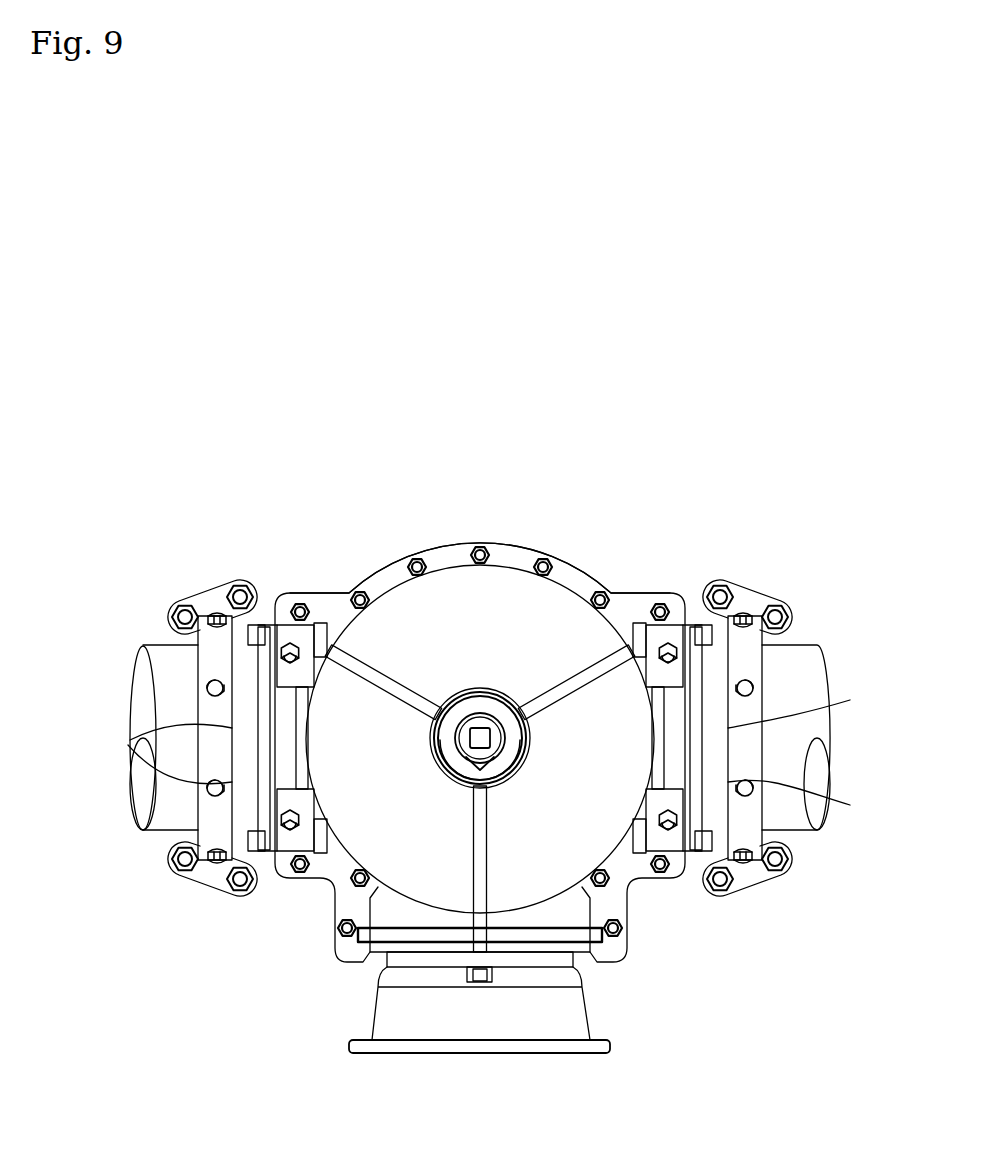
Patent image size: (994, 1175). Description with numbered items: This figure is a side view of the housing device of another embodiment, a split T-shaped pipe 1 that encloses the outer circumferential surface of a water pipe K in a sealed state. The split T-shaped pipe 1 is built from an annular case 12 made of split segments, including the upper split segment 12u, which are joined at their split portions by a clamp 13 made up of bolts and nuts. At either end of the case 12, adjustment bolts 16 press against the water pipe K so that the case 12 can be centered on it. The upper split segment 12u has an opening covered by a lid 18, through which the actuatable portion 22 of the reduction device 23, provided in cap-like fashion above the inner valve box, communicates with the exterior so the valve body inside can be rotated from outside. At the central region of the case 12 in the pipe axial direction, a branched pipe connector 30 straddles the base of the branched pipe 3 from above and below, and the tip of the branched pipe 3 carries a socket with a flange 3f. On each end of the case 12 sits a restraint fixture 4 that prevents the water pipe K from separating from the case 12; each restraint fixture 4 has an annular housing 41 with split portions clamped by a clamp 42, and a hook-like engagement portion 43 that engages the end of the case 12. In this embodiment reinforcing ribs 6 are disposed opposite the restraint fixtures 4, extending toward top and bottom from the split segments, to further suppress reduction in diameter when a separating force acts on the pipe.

The split T-shaped pipe 1 is at (212, 496).
The branched pipe 3 is at (418, 1025).
The flange 3f is at (582, 1055).
The restraint fixture 4 is at (167, 581).
The reinforcing rib 6 is at (292, 847).
The case 12 is at (514, 545).
The upper split segment 12u is at (341, 625).
The clamp 13 is at (413, 550).
The adjustment bolt 16 is at (668, 641).
The lid 18 is at (545, 632).
The actuatable portion 22 is at (505, 736).
The reduction device 23 is at (442, 770).
The branched pipe connector 30 is at (616, 984).
The annular housing 41 is at (208, 748).
The clamp 42 is at (177, 874).
The hook-like engagement portion 43 is at (253, 707).
The water pipe K is at (150, 662).